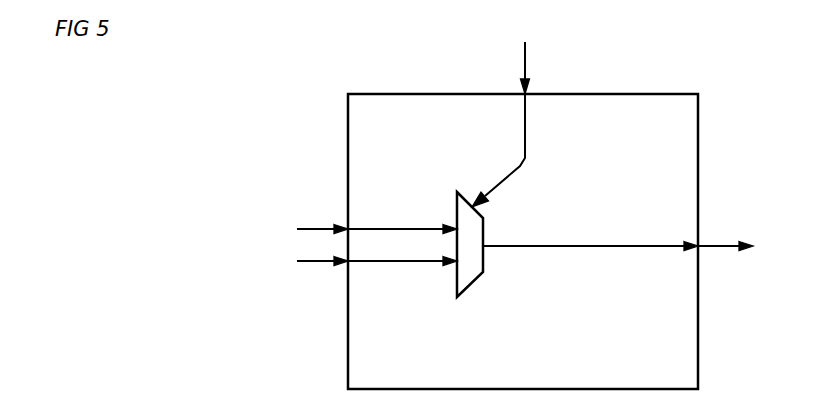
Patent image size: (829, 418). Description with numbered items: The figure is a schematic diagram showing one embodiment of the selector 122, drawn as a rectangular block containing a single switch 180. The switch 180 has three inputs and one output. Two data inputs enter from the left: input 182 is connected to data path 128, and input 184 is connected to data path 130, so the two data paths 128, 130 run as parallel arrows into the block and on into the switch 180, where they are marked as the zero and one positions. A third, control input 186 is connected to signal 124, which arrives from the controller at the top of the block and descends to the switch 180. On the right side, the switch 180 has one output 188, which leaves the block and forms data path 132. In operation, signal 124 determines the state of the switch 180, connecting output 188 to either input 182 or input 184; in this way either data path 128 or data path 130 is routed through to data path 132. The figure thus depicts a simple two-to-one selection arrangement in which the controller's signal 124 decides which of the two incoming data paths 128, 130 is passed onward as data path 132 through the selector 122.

The selector 122 is at (495, 127).
The signal 124 is at (529, 63).
The data path 128 is at (312, 225).
The data path 130 is at (310, 266).
The data path 132 is at (711, 245).
The switch 180 is at (479, 280).
The input 182 is at (416, 226).
The input 184 is at (406, 265).
The input 186 is at (494, 186).
The output 188 is at (582, 245).